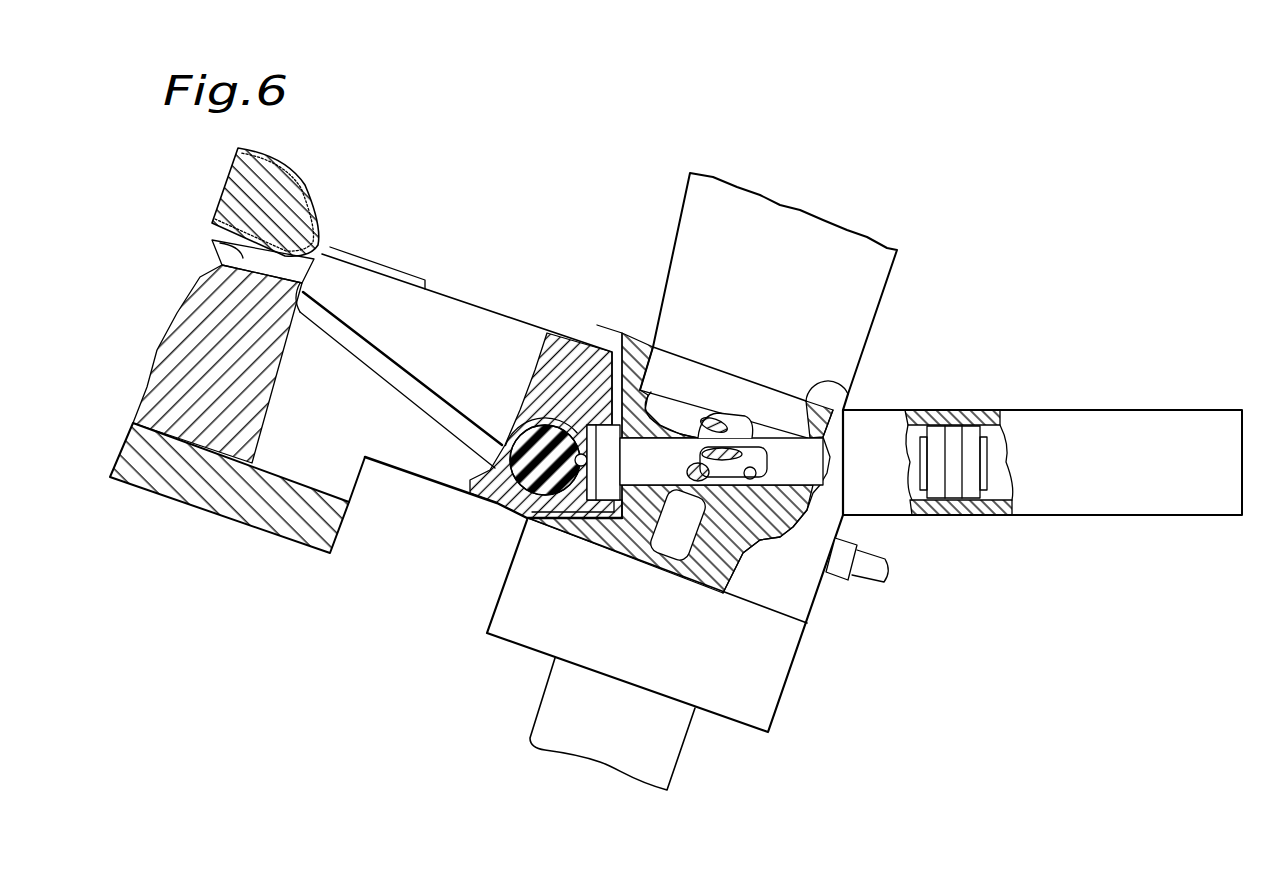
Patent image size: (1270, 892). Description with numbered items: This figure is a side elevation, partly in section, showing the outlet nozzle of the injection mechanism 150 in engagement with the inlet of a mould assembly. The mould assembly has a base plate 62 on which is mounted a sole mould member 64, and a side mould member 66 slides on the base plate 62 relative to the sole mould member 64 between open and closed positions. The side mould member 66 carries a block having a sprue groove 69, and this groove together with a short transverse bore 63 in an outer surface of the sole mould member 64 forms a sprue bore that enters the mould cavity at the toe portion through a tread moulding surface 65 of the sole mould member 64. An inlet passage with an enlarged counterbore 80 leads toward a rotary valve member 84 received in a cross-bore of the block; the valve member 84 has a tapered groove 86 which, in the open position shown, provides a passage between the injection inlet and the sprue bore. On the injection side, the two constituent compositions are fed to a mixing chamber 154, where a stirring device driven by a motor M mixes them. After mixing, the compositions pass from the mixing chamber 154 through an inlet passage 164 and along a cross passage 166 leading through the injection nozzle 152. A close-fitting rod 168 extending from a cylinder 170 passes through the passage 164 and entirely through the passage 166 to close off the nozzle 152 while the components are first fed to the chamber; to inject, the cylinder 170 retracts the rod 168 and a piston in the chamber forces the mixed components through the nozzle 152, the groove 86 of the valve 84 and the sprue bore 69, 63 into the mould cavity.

The base plate 62 is at (248, 515).
The short transverse bore 63 is at (300, 284).
The sole mould member 64 is at (167, 348).
The tread moulding surface 65 is at (213, 228).
The side mould member 66 is at (458, 294).
The sprue groove 69 is at (410, 388).
The enlarged counterbore 80 is at (627, 530).
The rotary valve member 84 is at (512, 460).
The tapered groove 86 is at (567, 411).
The clamp block 150 is at (648, 238).
The injection nozzle 152 is at (605, 432).
The mixing chamber 154 is at (830, 382).
The inlet passage 164 is at (680, 558).
The cross passage 166 is at (755, 478).
The rod 168 is at (752, 452).
The cylinder 170 is at (1093, 420).
The motor M is at (773, 690).